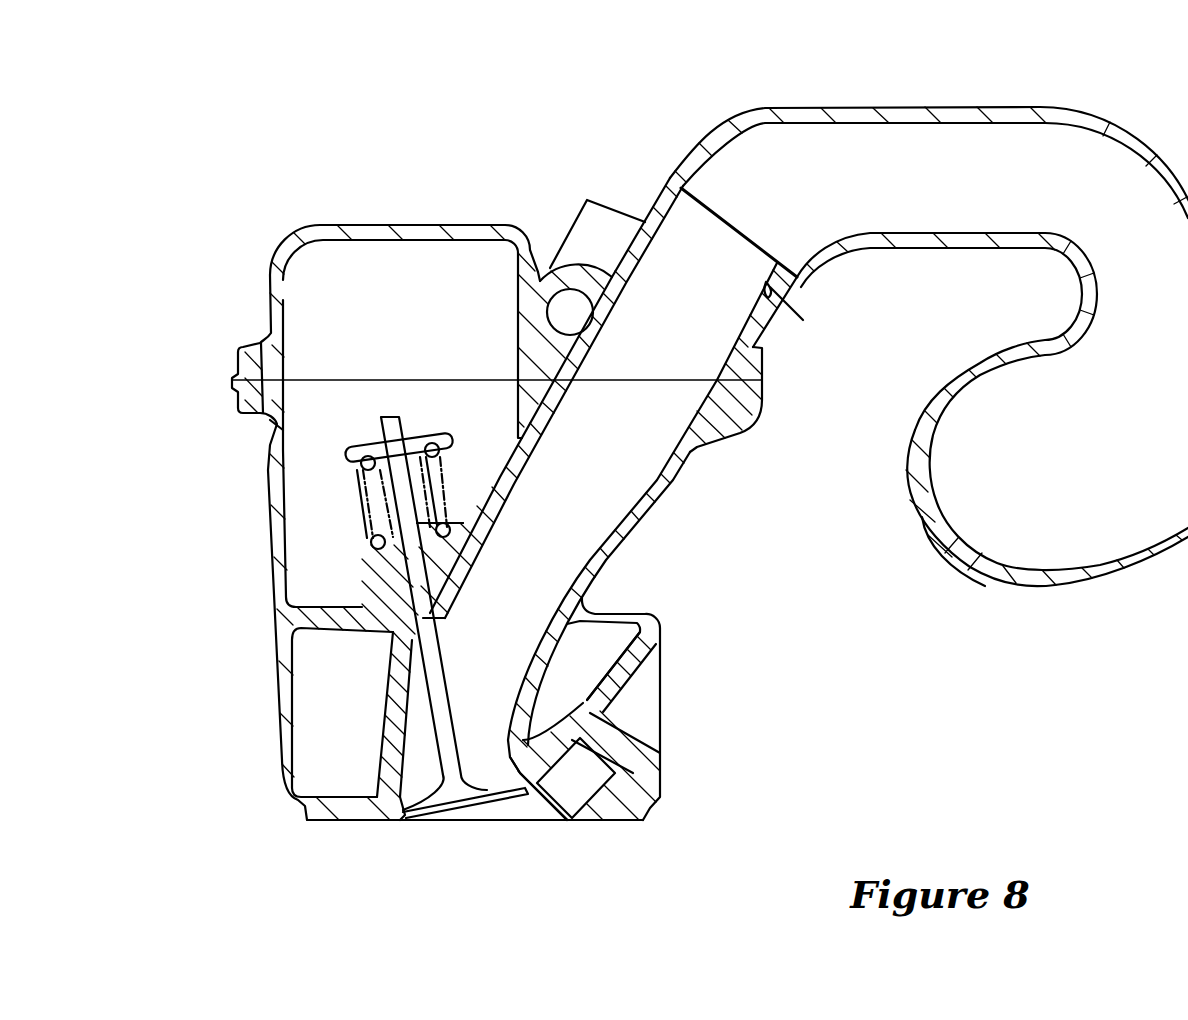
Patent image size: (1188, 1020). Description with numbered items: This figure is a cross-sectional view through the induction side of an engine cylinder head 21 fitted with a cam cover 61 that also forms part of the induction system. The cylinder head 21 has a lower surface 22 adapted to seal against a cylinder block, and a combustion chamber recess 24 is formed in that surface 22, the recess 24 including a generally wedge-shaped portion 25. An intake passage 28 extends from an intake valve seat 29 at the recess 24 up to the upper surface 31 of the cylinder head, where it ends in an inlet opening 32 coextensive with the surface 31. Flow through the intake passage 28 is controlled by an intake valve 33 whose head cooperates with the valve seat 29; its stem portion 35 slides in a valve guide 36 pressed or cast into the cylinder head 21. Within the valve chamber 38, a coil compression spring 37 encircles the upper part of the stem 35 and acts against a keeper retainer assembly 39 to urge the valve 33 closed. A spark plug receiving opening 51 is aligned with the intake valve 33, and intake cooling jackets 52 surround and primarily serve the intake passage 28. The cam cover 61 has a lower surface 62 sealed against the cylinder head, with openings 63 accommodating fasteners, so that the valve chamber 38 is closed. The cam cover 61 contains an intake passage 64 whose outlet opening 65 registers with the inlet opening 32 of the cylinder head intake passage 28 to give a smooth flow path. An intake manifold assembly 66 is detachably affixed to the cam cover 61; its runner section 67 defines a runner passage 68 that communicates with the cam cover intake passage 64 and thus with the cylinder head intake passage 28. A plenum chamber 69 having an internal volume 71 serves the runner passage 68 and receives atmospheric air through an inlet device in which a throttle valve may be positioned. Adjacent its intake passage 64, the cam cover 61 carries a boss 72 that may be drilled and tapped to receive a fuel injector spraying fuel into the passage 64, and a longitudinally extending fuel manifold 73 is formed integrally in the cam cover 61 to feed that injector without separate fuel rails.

The cylinder head 21 is at (268, 546).
The lower surface 22 is at (740, 373).
The combustion chamber recess 24 is at (543, 804).
The wedge-shaped portion 25 is at (507, 812).
The intake passage 28 is at (624, 530).
The intake valve seat 29 is at (405, 818).
The upper surface 31 is at (468, 790).
The inlet opening 32 is at (570, 392).
The intake valve 33 is at (454, 671).
The stem portion 35 is at (455, 707).
The valve guide 36 is at (418, 603).
The coil compression spring 37 is at (365, 498).
The valve chamber 38 is at (330, 293).
The keeper retainer assembly 39 is at (445, 438).
The spark plug receiving opening 51 is at (648, 750).
The intake cooling jacket 52 is at (308, 697).
The cam cover 61 is at (488, 230).
The lower surface 62 is at (263, 406).
The openings 63 is at (263, 347).
The cam cover intake passage 64 is at (758, 387).
The outlet opening 65 is at (590, 372).
The intake manifold assembly 66 is at (862, 110).
The runner section 67 is at (676, 180).
The runner passage 68 is at (915, 232).
The plenum chamber 69 is at (1000, 585).
The internal volume 71 is at (1102, 466).
The boss 72 is at (598, 222).
The fuel manifold 73 is at (568, 308).